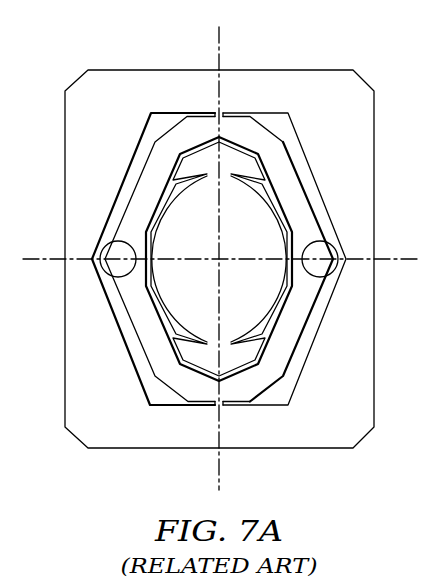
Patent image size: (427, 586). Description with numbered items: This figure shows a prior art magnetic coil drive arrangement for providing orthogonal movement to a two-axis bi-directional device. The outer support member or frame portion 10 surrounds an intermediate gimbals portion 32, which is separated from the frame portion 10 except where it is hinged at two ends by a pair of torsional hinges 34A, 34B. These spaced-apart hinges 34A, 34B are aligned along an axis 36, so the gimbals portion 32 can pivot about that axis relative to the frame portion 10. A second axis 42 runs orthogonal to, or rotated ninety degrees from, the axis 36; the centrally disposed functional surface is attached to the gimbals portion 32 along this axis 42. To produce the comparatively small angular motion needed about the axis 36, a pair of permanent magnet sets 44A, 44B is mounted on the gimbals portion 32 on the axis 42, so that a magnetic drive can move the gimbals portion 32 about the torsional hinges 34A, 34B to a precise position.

The support member or frame portion 10 is at (320, 70).
The axis 36 is at (215, 49).
The axis 42 is at (38, 257).
The intermediate gimbals portion 32 is at (167, 376).
The torsional hinge 34A is at (222, 409).
The torsional hinge 34B is at (223, 112).
The permanent magnet set 44A is at (122, 250).
The permanent magnet set 44B is at (315, 248).